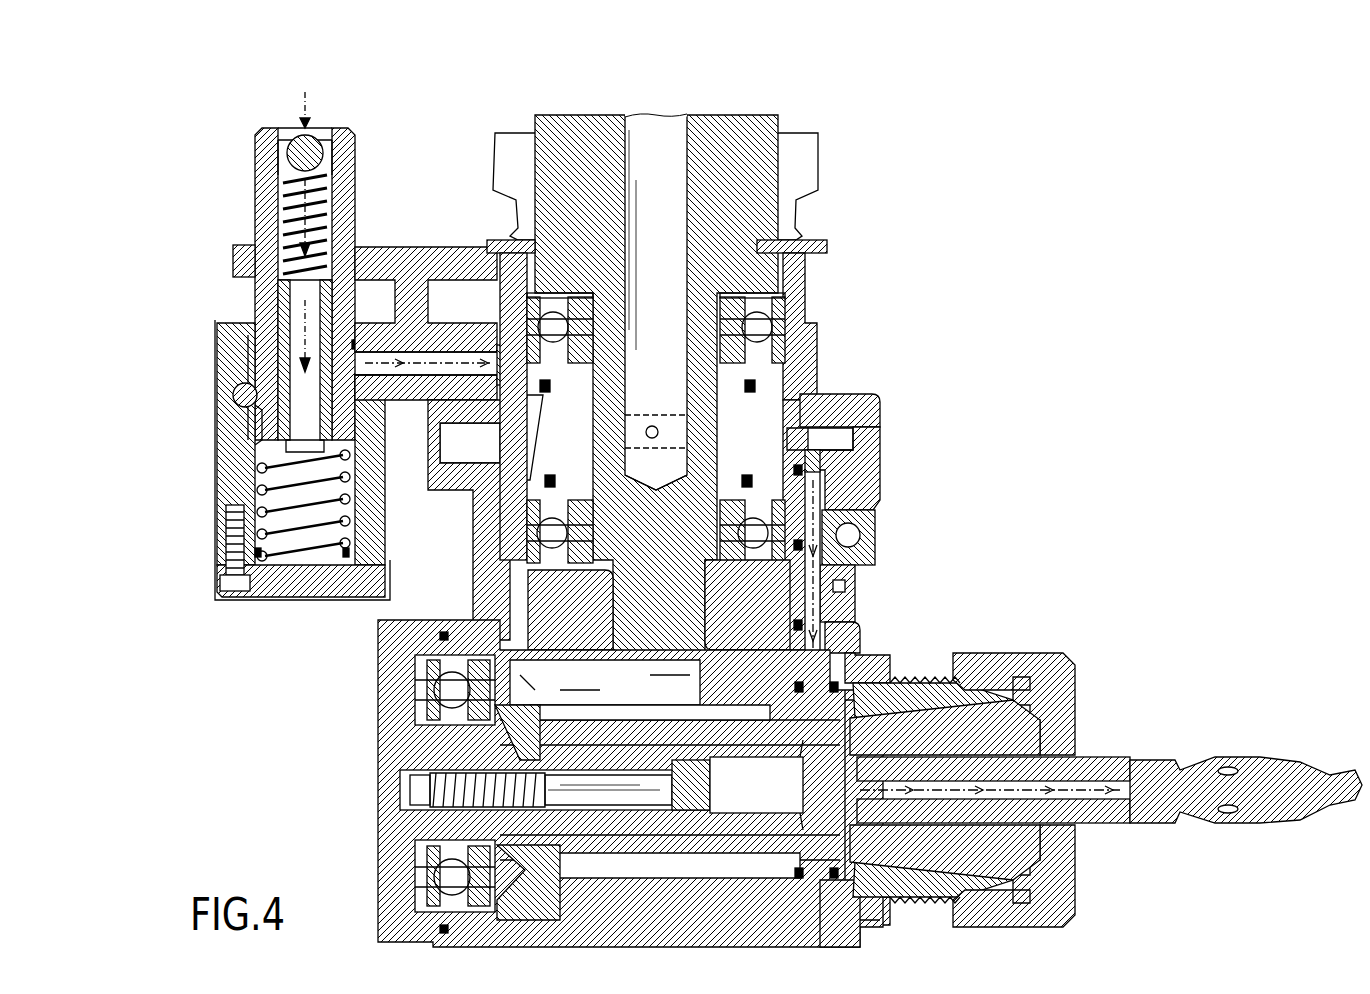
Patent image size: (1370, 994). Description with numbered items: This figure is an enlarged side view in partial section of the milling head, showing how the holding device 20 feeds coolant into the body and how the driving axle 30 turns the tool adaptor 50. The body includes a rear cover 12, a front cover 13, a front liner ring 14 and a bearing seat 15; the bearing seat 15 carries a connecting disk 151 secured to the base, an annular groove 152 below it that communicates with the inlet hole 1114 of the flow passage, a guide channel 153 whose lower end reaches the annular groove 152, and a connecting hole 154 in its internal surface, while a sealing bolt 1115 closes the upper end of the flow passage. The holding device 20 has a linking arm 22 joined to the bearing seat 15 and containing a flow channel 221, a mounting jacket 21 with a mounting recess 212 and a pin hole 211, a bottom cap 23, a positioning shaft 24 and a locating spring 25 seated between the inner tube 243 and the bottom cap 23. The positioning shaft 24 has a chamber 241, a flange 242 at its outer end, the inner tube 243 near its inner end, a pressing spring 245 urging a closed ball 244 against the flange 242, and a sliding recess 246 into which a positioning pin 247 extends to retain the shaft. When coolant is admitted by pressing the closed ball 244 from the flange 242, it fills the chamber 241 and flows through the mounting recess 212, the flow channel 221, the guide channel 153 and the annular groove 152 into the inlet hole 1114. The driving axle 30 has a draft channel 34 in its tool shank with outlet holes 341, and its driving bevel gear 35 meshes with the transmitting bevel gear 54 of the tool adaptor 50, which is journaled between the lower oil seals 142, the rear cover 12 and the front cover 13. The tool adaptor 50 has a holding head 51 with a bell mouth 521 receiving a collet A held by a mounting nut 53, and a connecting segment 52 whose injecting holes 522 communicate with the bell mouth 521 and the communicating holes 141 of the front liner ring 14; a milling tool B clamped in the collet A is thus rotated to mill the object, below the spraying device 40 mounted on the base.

The rear cover 12 is at (400, 651).
The front cover 13 is at (864, 945).
The front liner ring 14 is at (798, 905).
The bearing seat 15 is at (838, 336).
The holding device 20 is at (201, 581).
The mounting jacket 21 is at (235, 459).
The linking arm 22 is at (441, 338).
The bottom cap 23 is at (280, 598).
The positioning shaft 24 is at (268, 227).
The locating spring 25 is at (262, 495).
The driving axle 30 is at (810, 163).
The draft channel 34 is at (615, 200).
The driving bevel gear 35 is at (548, 604).
The spraying device 40 is at (898, 563).
The tool adaptor 50 is at (408, 825).
The holding head 51 is at (958, 692).
The connecting segment 52 is at (738, 820).
The mounting nut 53 is at (1048, 666).
The transmitting bevel gear 54 is at (535, 899).
The communicating holes 141 is at (858, 634).
The lower oil seals 142 is at (880, 668).
The connecting disk 151 is at (865, 409).
The annular groove 152 is at (505, 526).
The guide channel 153 is at (518, 418).
The connecting hole 154 is at (656, 467).
The pin hole 211 is at (250, 411).
The mounting recess 212 is at (362, 499).
The flow channel 221 is at (438, 377).
The chamber 241 is at (330, 196).
The flange 242 is at (285, 138).
The inner tube 243 is at (283, 304).
The closed ball 244 is at (318, 152).
The pressing spring 245 is at (292, 195).
The sliding recess 246 is at (262, 355).
The positioning pin 247 is at (238, 391).
The outlet holes 341 is at (652, 425).
The bell mouth 521 is at (960, 893).
The injecting holes 522 is at (803, 757).
The inlet hole 1114 is at (862, 510).
The sealing bolt 1115 is at (860, 456).
The collet A is at (1048, 731).
The milling tool B is at (1190, 822).